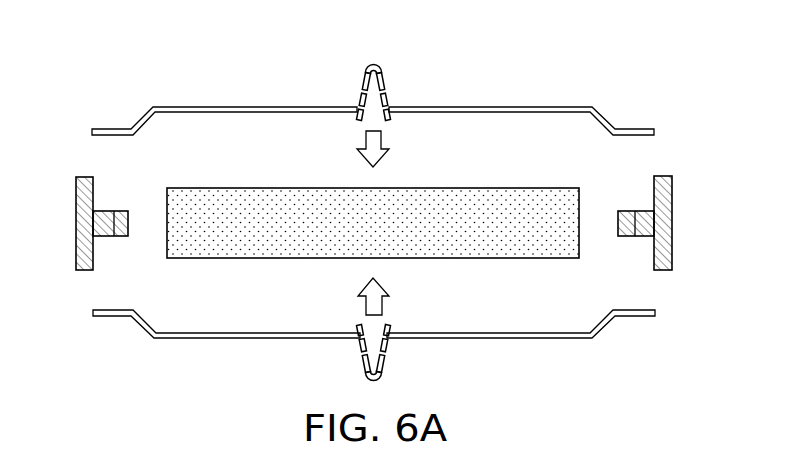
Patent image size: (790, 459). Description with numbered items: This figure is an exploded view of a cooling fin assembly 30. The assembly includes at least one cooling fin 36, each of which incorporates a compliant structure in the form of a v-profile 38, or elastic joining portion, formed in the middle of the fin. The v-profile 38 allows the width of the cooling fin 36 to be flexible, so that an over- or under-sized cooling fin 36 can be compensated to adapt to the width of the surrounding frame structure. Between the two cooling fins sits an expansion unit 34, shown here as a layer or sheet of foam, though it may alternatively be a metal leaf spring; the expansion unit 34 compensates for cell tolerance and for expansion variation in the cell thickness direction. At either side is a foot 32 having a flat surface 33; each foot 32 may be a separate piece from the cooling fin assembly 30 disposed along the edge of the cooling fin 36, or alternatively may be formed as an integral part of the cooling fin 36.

The cooling fin assembly 30 is at (67, 44).
The foot 32 is at (668, 218).
The flat surface 33 is at (72, 222).
The expansion unit 34 is at (528, 196).
The cooling fin 36 is at (540, 107).
The v-profile 38 is at (384, 95).